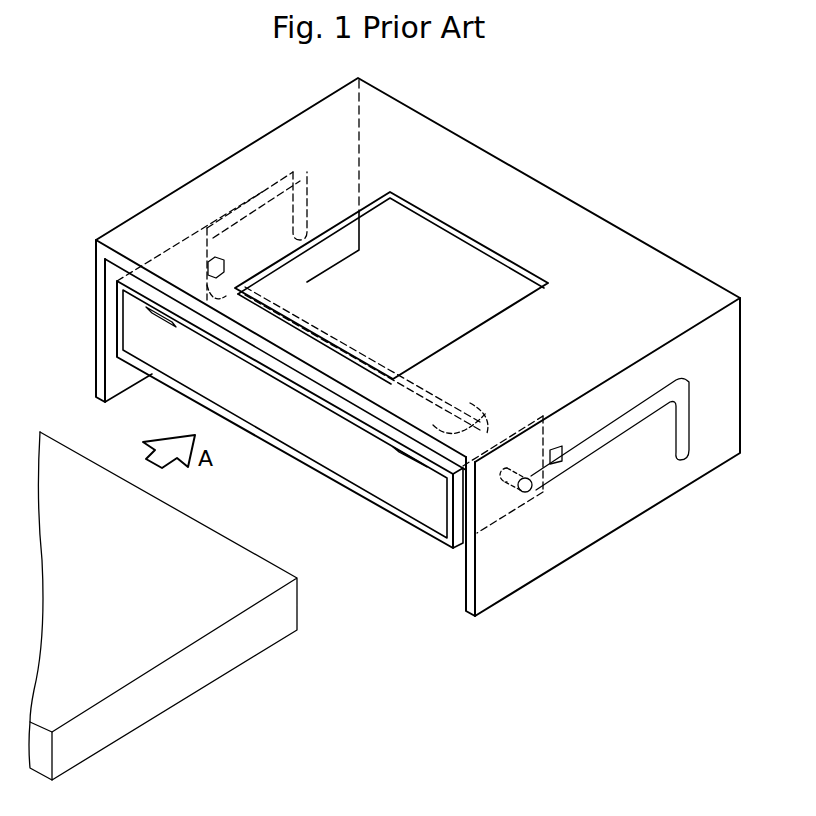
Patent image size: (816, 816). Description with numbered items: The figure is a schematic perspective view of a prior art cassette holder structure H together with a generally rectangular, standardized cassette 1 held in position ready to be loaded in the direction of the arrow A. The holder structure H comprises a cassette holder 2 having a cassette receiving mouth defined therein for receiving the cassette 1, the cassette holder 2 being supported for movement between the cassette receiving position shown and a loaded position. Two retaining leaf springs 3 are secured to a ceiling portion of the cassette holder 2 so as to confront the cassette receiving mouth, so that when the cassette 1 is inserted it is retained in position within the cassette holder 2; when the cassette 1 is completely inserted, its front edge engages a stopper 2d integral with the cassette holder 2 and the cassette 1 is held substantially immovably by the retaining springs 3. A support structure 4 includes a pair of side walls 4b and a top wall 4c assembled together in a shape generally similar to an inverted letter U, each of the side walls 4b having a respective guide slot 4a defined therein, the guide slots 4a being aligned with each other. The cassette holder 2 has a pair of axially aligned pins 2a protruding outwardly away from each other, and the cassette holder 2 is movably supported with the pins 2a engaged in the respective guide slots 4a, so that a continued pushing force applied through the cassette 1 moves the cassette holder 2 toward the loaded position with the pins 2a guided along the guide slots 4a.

The cassette 1 is at (173, 688).
The cassette holder 2 is at (403, 497).
The pins 2a is at (528, 493).
The stopper 2d is at (380, 350).
The retaining leaf springs 3 is at (208, 275).
The support structure 4 is at (458, 157).
The guide slot 4a is at (262, 190).
The side walls 4b is at (94, 300).
The top wall 4c is at (645, 262).
The holder structure H is at (406, 347).